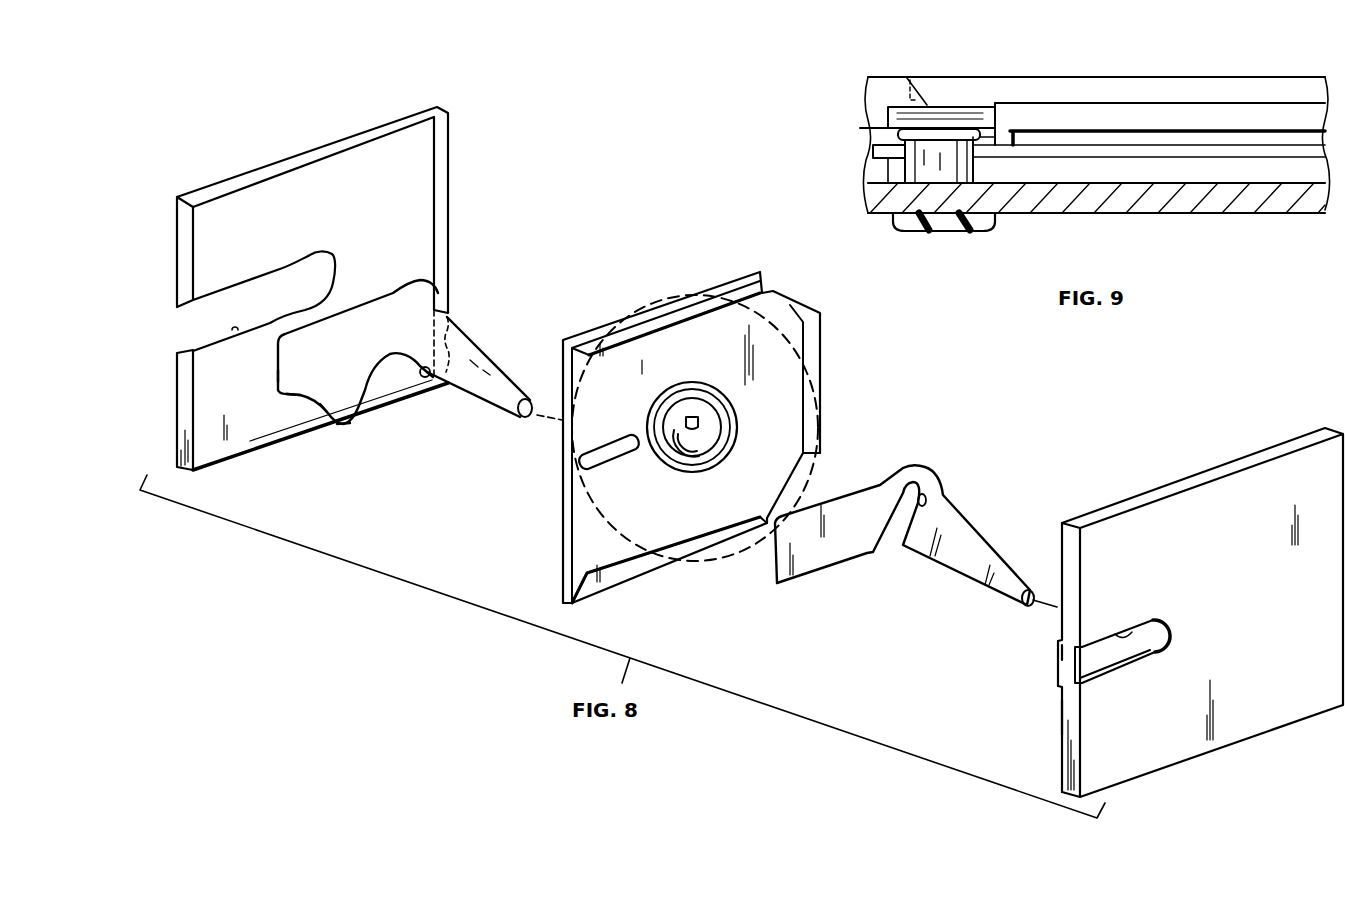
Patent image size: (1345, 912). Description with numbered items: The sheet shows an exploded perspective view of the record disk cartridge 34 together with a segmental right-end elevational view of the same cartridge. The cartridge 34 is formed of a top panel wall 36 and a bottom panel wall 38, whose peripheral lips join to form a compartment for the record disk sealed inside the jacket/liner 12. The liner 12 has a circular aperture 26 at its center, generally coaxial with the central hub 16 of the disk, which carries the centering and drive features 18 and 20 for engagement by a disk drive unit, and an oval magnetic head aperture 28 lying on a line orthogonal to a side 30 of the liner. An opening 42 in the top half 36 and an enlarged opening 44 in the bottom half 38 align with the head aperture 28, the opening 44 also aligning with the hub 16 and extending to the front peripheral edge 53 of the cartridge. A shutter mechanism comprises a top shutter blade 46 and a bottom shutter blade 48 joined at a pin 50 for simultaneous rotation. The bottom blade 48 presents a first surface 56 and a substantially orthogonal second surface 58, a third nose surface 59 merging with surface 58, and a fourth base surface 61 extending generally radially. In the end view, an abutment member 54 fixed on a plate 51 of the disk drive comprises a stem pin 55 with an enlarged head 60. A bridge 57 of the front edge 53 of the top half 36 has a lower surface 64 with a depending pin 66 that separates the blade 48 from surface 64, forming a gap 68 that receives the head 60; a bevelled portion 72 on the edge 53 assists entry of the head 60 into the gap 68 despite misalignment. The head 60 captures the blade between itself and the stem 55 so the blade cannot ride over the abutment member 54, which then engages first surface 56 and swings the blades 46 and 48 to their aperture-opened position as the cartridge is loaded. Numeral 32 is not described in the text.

In FIG. 8, the jacket/liner 12 is at (669, 452).
In FIG. 8, the central hub 16 is at (697, 448).
In FIG. 8, the centering feature 18 is at (698, 423).
In FIG. 8, the drive feature 20 is at (668, 465).
In FIG. 8, the circular aperture 26 is at (703, 382).
In FIG. 8, the oval magnetic head aperture 28 is at (606, 447).
In FIG. 8, the side of the liner 30 is at (565, 523).
In FIG. 8, the holder assembly 32 is at (369, 288).
In FIG. 9, the record disk cartridge 34 is at (1074, 132).
In FIG. 8, the top panel wall 36 is at (1174, 612).
In FIG. 9, the top panel wall 36 is at (1185, 76).
In FIG. 8, the bottom panel wall 38 is at (353, 216).
In FIG. 9, the bottom panel wall 38 is at (1258, 173).
In FIG. 8, the opening 42 is at (1128, 628).
In FIG. 9, the opening 42 is at (923, 72).
In FIG. 8, the opening 44 is at (237, 335).
In FIG. 8, the top shutter blade 46 is at (917, 572).
In FIG. 8, the bottom shutter blade 48 is at (401, 374).
In FIG. 9, the bottom shutter blade 48 is at (1087, 155).
In FIG. 8, the pin 50 is at (427, 379).
In FIG. 9, the plate 51 is at (1215, 205).
In FIG. 8, the peripheral edge 53 is at (1072, 720).
In FIG. 9, the peripheral edge 53 is at (1220, 115).
In FIG. 9, the abutment member 54 is at (948, 140).
In FIG. 9, the pin (stem) 55 is at (912, 170).
In FIG. 8, the first surface 56 is at (277, 378).
In FIG. 8, the bridge 57 is at (1063, 658).
In FIG. 9, the bridge 57 is at (1140, 122).
In FIG. 8, the second surface 58 is at (300, 400).
In FIG. 8, the third nose surface 59 is at (322, 414).
In FIG. 9, the enlarged head 60 is at (898, 132).
In FIG. 8, the fourth base surface 61 is at (353, 422).
In FIG. 8, the lower surface 64 is at (930, 492).
In FIG. 9, the lower surface 64 is at (1098, 133).
In FIG. 9, the depending pin 66 is at (1007, 140).
In FIG. 9, the gap 68 is at (992, 137).
In FIG. 9, the bevelled portion 72 is at (943, 112).